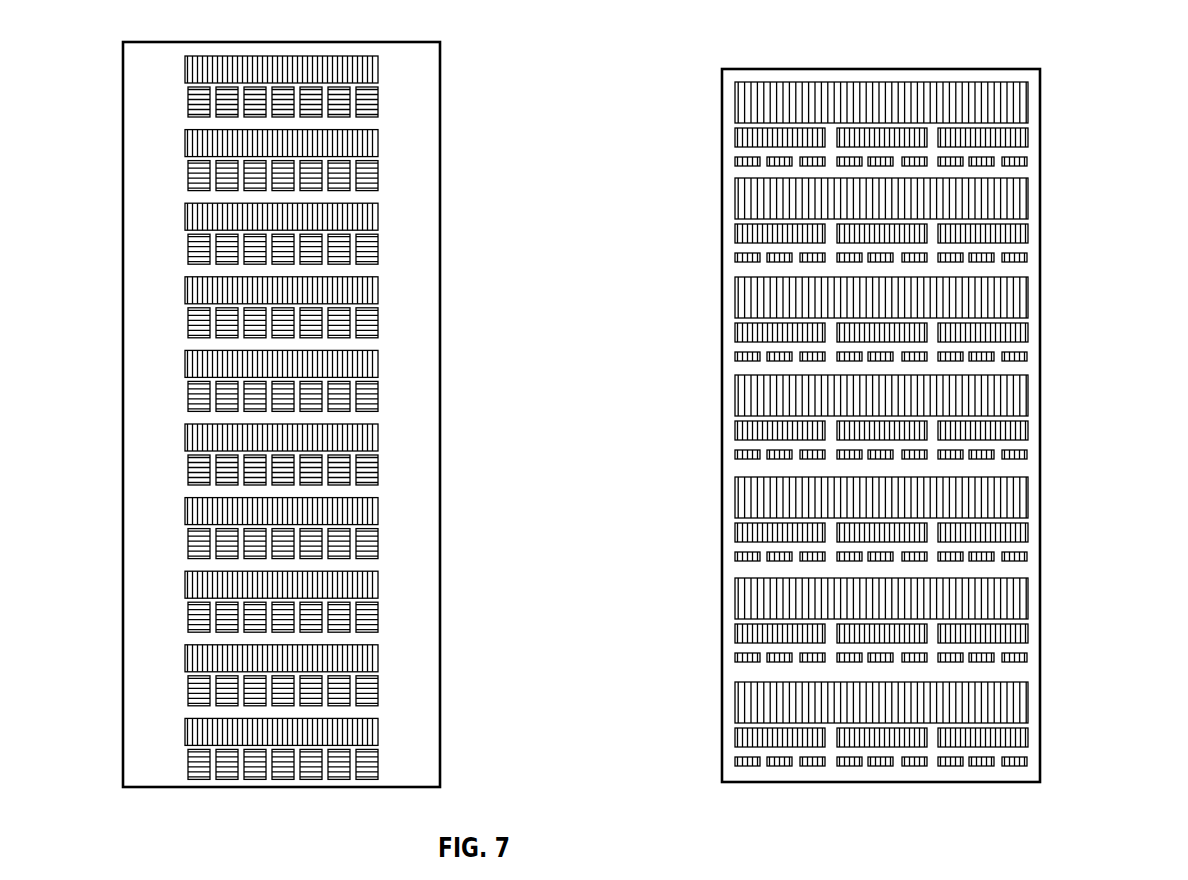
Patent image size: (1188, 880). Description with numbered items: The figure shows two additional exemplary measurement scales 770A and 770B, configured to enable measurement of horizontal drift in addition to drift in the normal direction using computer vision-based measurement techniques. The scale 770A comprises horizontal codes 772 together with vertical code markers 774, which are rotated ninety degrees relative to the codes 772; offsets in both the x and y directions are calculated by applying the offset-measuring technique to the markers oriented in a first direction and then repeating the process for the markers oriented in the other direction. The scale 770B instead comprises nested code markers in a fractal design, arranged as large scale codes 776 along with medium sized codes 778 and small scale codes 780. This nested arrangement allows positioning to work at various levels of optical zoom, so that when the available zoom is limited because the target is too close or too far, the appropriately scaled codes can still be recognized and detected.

The measurement scale 770A is at (361, 414).
The measurement scale 770B is at (950, 425).
The horizontal codes 772 is at (392, 287).
The vertical code markers 774 is at (391, 322).
The large scale codes 776 is at (1041, 289).
The medium sized codes 778 is at (1040, 327).
The small scale codes 780 is at (1040, 354).